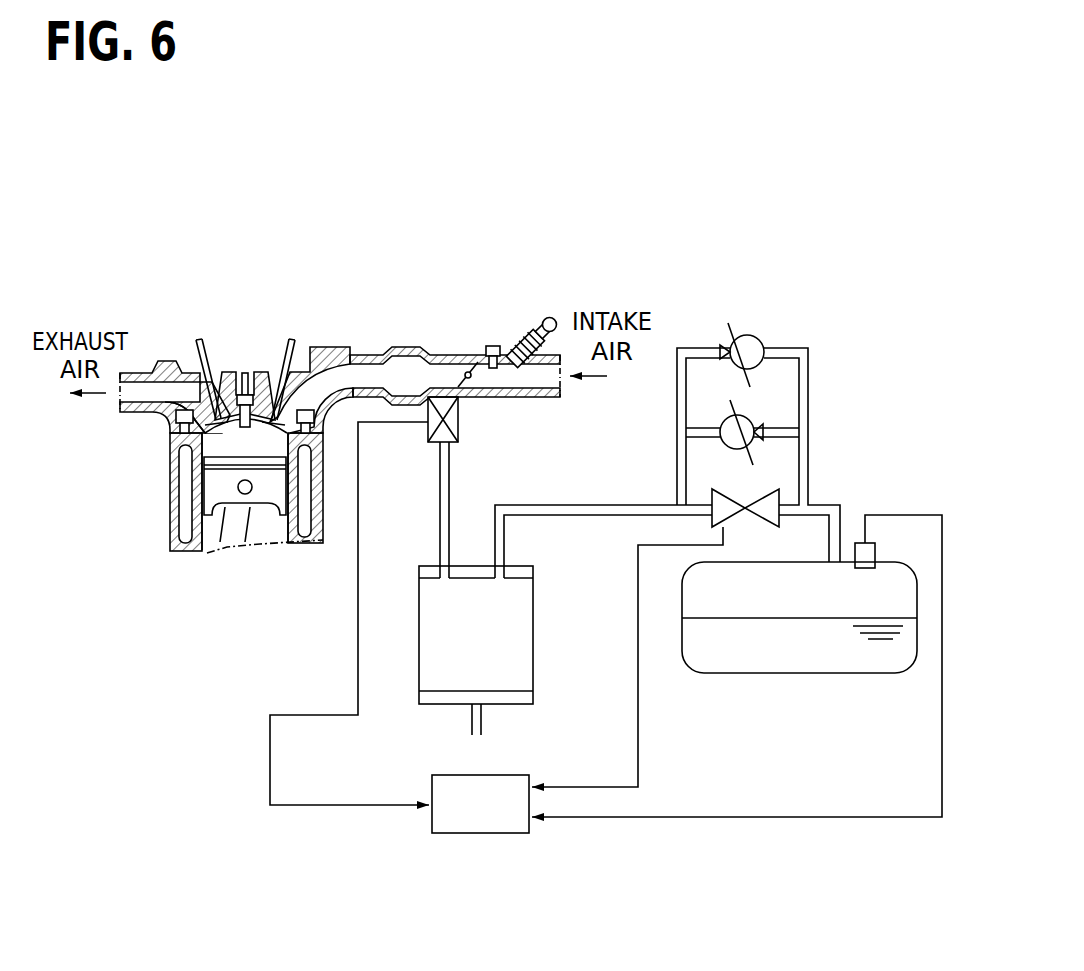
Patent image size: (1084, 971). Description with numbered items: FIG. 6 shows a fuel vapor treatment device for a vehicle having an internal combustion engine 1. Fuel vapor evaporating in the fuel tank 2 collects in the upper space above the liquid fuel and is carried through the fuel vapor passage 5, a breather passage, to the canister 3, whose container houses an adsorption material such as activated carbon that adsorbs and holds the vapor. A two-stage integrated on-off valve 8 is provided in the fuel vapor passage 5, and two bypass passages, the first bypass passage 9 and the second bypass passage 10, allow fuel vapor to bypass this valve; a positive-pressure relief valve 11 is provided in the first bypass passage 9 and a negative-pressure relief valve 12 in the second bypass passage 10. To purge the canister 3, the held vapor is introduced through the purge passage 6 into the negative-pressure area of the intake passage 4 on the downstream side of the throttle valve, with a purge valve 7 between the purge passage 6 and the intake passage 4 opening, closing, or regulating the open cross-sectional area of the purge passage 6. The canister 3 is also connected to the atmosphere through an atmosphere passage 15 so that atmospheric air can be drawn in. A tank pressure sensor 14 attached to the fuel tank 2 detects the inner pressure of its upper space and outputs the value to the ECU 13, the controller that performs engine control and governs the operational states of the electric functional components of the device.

The internal combustion engine 1 is at (148, 547).
The fuel tank 2 is at (783, 673).
The canister 3 is at (523, 645).
The intake passage 4 is at (442, 375).
The fuel vapor passage 5 is at (563, 505).
The purge passage 6 is at (440, 500).
The purge valve 7 is at (448, 417).
The two-stage integrated on-off valve 8 is at (762, 492).
The first bypass passage 9 is at (702, 435).
The second bypass passage 10 is at (705, 352).
The positive-pressure relief valve 11 is at (742, 427).
The negative-pressure relief valve 12 is at (748, 343).
The ECU 13 is at (478, 833).
The tank pressure sensor 14 is at (872, 555).
The atmosphere passage 15 is at (483, 718).